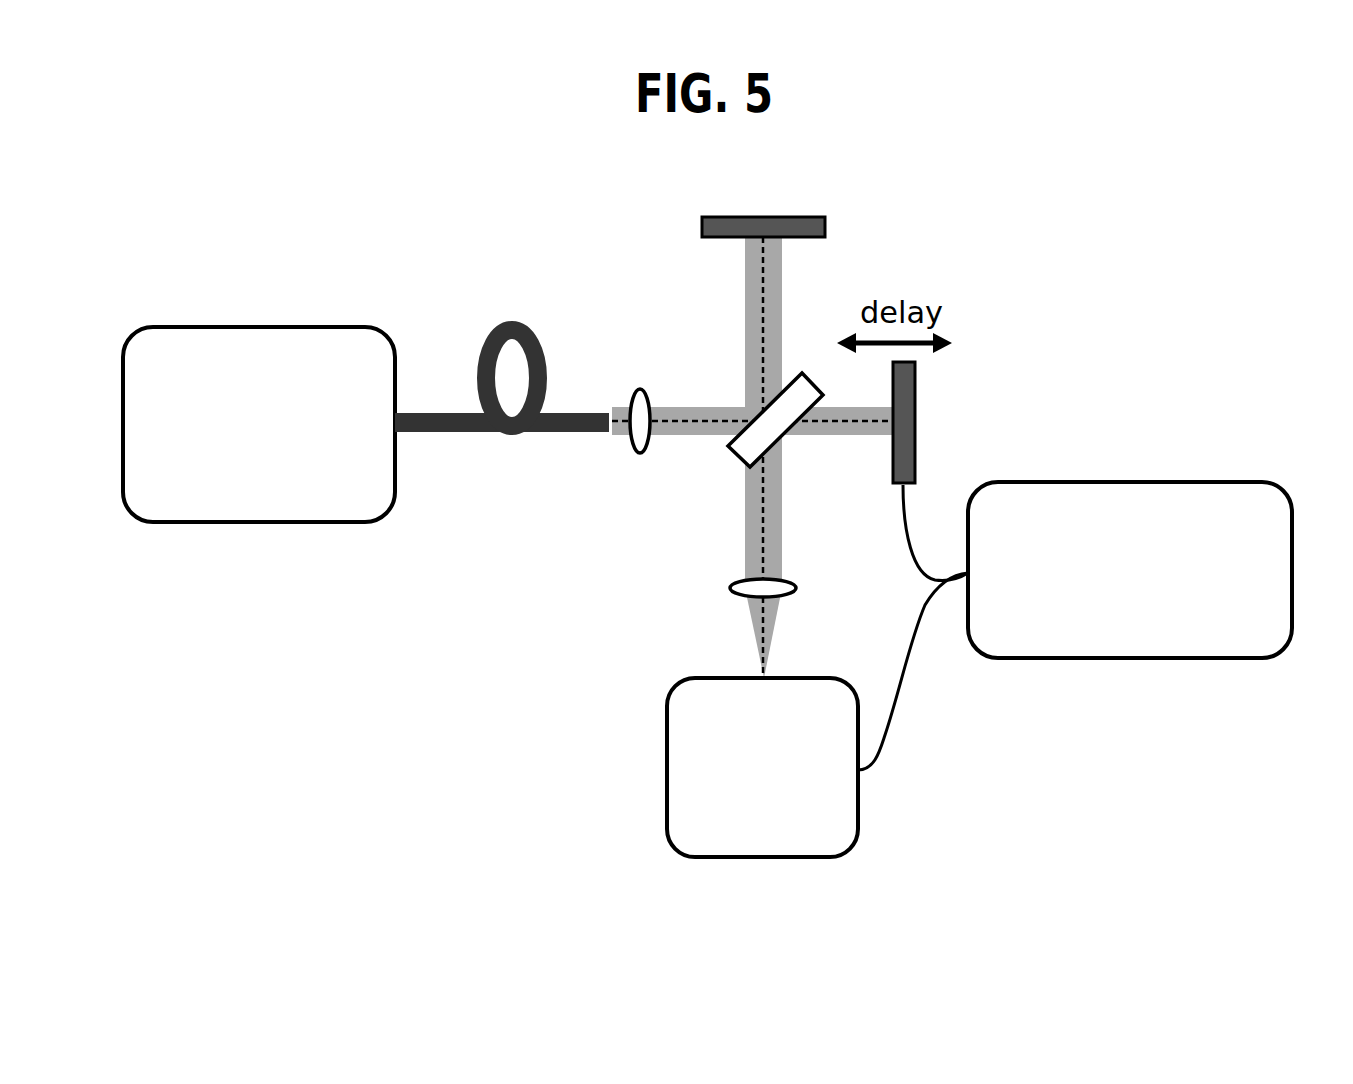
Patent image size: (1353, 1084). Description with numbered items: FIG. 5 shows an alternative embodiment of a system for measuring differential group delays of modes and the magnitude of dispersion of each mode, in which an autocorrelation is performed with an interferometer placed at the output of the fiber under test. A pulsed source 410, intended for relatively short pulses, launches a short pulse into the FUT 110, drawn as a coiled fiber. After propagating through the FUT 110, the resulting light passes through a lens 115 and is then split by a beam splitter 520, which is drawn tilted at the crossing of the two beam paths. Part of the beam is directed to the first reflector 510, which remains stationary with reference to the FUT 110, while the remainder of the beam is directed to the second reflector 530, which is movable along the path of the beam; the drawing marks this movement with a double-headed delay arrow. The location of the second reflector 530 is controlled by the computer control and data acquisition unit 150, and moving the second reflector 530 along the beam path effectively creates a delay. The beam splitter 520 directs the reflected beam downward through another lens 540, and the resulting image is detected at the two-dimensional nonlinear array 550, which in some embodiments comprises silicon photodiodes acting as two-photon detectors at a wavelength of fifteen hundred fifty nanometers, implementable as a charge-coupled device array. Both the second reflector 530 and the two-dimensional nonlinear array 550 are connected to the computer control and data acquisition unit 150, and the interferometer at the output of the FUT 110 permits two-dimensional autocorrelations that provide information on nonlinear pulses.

The pulsed source 410 is at (321, 328).
The FUT 110 is at (544, 350).
The lens 115 is at (642, 389).
The first reflector 510 is at (823, 217).
The beam splitter 520 is at (737, 453).
The second reflector 530 is at (916, 436).
The focusing lens 540 is at (733, 583).
The 2D nonlinear array 550 is at (681, 681).
The computer control and data acquisition unit 150 is at (1063, 481).